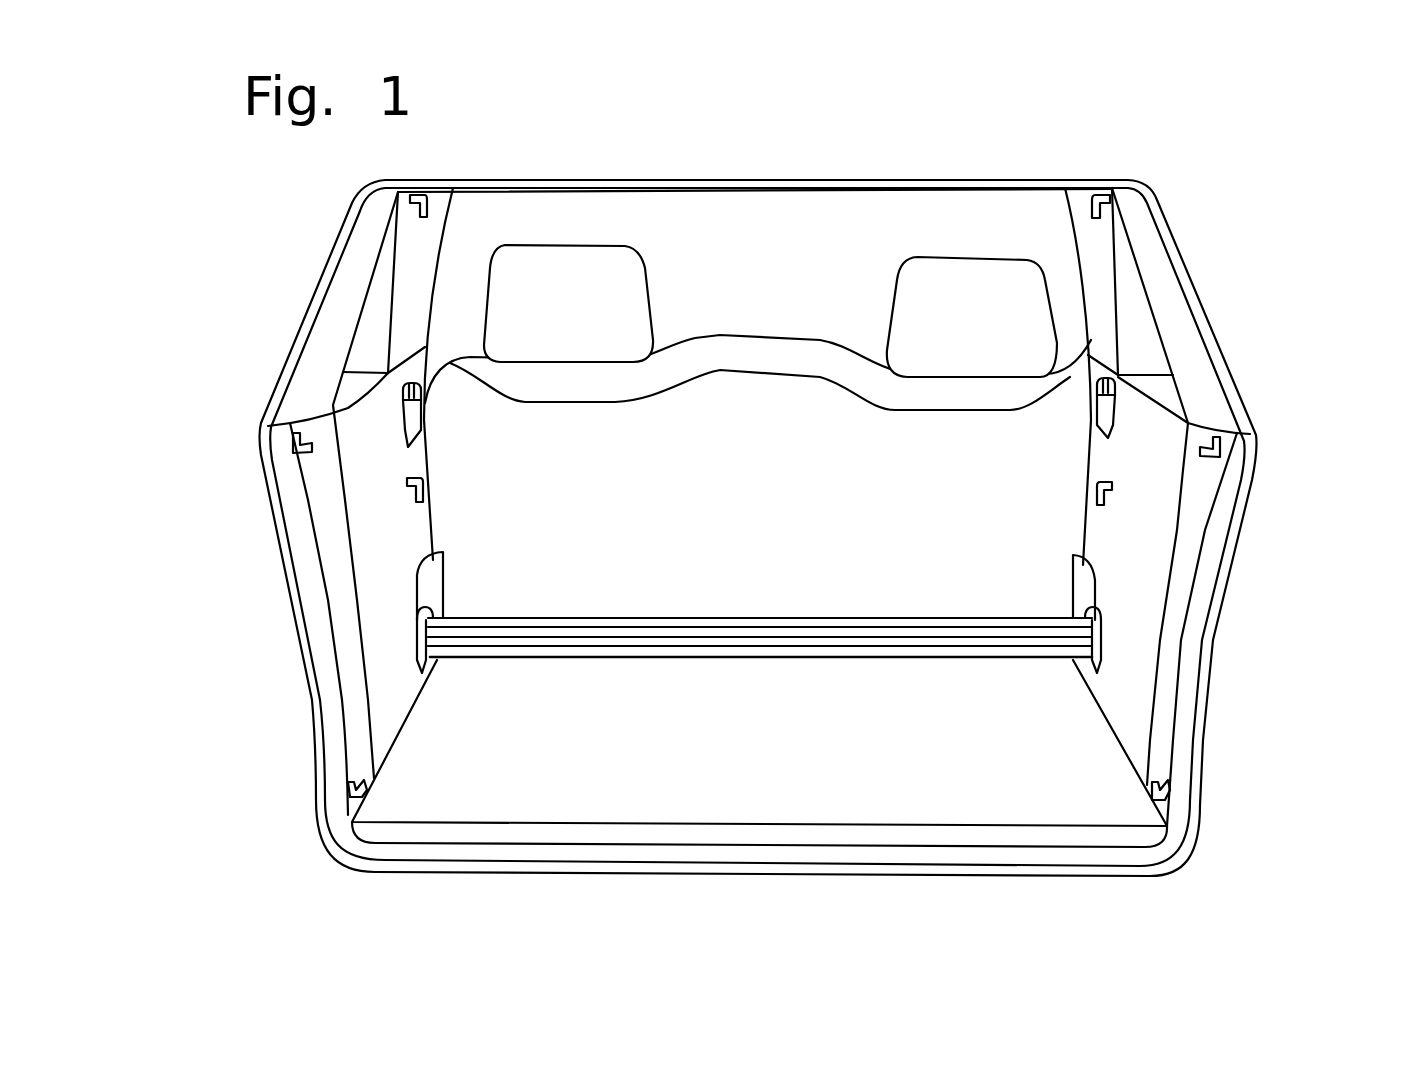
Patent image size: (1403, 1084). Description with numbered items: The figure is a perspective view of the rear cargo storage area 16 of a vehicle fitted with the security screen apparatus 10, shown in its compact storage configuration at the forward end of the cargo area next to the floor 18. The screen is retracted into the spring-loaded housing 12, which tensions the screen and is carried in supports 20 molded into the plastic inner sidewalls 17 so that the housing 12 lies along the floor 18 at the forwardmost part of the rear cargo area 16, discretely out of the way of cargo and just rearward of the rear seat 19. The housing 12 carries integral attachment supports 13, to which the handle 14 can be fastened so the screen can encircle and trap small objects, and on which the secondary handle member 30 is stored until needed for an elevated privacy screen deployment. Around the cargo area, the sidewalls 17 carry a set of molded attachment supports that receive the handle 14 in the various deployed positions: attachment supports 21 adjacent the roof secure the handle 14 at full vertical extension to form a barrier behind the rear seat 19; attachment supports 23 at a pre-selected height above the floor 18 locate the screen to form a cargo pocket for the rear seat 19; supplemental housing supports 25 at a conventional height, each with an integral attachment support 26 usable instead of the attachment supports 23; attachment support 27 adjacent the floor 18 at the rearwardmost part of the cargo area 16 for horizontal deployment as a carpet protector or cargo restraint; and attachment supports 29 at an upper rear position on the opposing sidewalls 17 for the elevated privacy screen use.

The security screen apparatus 10 is at (764, 583).
The spring-loaded housing 12 is at (695, 660).
The attachment support 13 is at (443, 552).
The handle 14 is at (525, 655).
The rear cargo storage area 16 is at (1003, 212).
The sidewalls 17 is at (377, 567).
The floor 18 is at (955, 810).
The rear seat 19 is at (780, 392).
The supports 20 is at (414, 655).
The attachment supports 21 is at (430, 203).
The attachment supports 23 is at (420, 480).
The supplemental housing supports 25 is at (405, 447).
The integral attachment support 26 is at (388, 373).
The attachment support 27 is at (367, 795).
The attachment supports 29 is at (297, 453).
The secondary handle member 30 is at (702, 617).